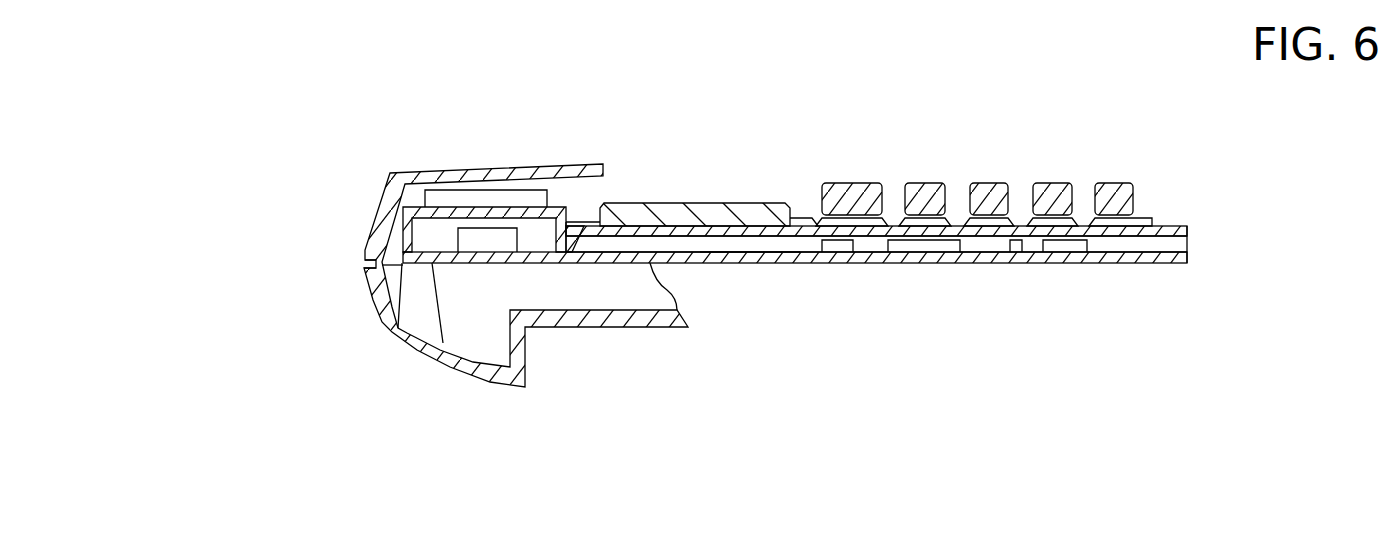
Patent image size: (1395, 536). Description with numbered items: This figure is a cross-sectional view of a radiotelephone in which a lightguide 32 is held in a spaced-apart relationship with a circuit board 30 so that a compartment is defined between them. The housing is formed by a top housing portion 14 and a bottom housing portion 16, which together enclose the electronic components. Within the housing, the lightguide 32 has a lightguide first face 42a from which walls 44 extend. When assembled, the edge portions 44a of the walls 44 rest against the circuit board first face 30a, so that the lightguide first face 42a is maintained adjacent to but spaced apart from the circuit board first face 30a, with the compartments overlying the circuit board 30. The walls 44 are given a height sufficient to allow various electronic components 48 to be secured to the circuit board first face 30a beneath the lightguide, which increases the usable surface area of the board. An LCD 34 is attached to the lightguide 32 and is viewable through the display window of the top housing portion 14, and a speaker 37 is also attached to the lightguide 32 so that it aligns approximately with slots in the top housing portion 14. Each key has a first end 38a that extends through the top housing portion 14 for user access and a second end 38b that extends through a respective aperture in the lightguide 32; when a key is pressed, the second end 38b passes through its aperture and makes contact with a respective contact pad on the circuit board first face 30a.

The top housing portion 14 is at (403, 172).
The bottom housing portion 16 is at (373, 302).
The speaker 37 is at (513, 188).
The LCD 34 is at (713, 227).
The circuit board first face 30a is at (753, 252).
The circuit board 30 is at (800, 263).
The lightguide 32 is at (1170, 226).
The first end of key 38a is at (933, 182).
The second end of key 38b is at (832, 215).
The lightguide first face 42a is at (720, 260).
The walls 44 is at (1188, 240).
The edge portions of walls 44a is at (1187, 258).
The electronic components 48 is at (487, 248).